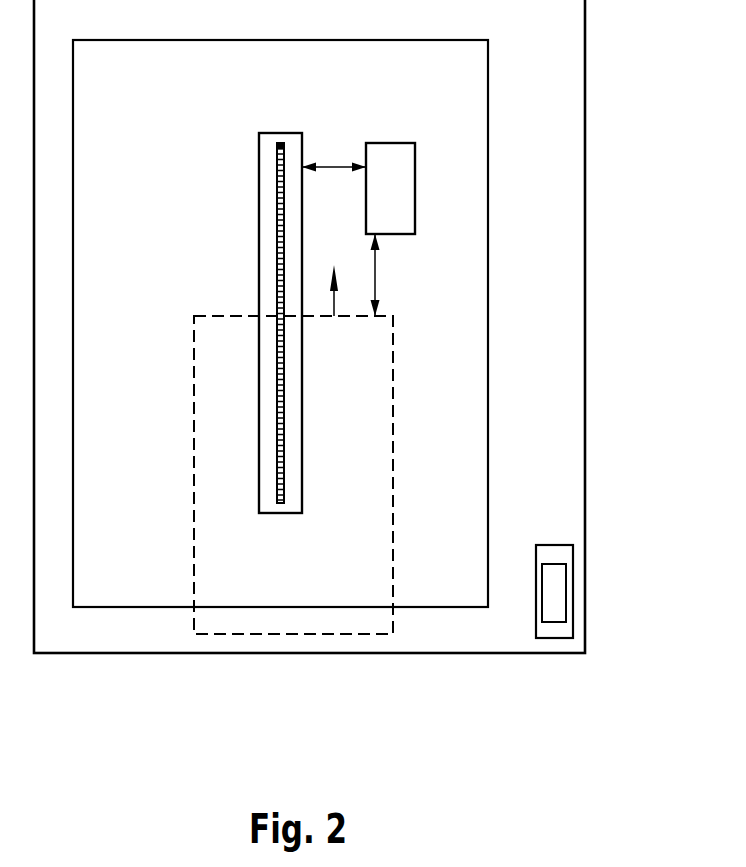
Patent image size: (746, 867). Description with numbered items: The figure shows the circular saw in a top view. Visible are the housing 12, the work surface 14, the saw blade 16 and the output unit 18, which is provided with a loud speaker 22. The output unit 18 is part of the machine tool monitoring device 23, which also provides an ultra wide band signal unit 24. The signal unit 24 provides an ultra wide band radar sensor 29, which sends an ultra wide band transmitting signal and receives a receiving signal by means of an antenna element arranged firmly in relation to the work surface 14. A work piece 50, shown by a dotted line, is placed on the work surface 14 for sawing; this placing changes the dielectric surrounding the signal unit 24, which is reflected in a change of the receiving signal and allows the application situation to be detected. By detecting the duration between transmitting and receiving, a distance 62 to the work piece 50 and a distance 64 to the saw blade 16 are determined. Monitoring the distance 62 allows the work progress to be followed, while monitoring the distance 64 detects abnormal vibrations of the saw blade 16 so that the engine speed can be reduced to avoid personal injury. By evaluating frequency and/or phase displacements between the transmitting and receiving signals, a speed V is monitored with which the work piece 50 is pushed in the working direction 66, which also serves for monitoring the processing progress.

The housing 12 is at (551, 60).
The work surface 14 is at (453, 393).
The saw blade 16 is at (277, 148).
The output unit 18 is at (556, 554).
The loud speaker 22 is at (553, 600).
The machine tool monitoring device 23 is at (431, 130).
The ultra wide band signal unit 24 is at (440, 190).
The ultra wide band radar sensor 29 is at (392, 160).
The work piece 50 is at (290, 636).
The distance to the work piece 62 is at (378, 273).
The distance to the saw blade 64 is at (338, 163).
The working direction 66 is at (333, 310).
The speed V is at (334, 297).